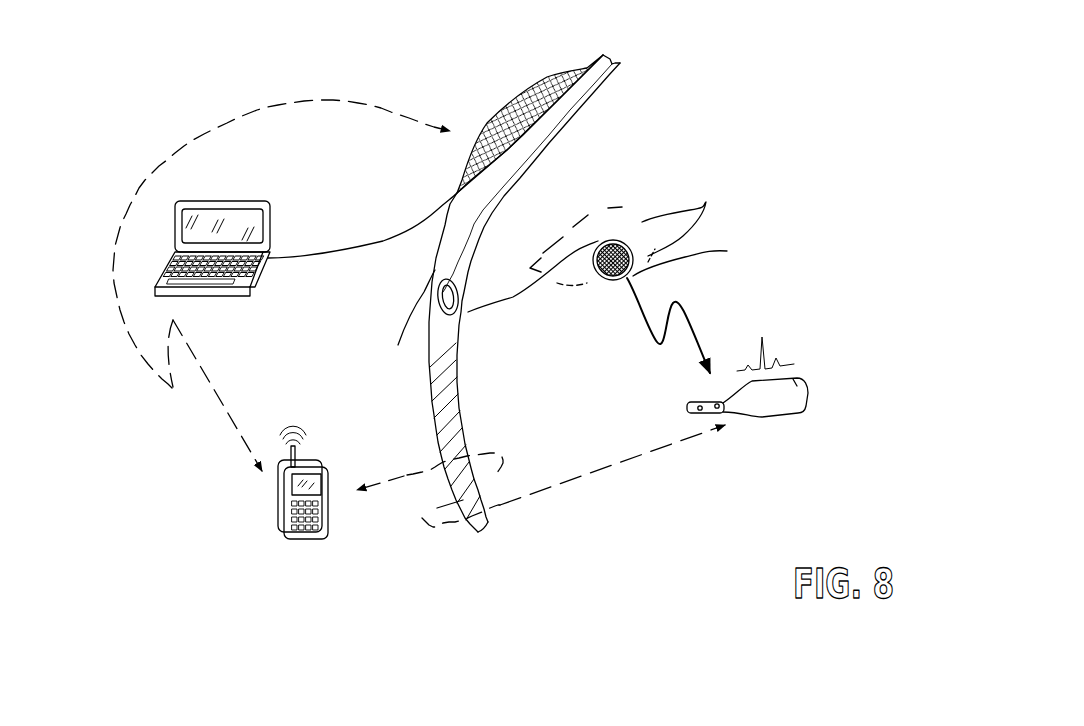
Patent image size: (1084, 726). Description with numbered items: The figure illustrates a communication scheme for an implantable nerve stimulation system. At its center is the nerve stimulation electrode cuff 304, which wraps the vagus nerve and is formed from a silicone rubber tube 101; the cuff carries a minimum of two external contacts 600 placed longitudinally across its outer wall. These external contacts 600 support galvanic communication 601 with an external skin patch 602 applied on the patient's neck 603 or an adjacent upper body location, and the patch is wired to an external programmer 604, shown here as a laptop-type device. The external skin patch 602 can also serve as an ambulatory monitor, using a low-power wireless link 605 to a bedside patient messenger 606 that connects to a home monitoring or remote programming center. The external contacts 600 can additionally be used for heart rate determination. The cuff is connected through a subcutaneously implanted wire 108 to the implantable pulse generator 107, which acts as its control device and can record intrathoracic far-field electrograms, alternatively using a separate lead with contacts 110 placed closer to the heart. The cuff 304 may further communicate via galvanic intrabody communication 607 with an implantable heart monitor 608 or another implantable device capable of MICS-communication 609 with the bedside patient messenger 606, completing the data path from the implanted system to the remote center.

The silicone rubber tube 101 is at (716, 252).
The implantable pulse generator 107 is at (440, 316).
The subcutaneously implanted wire 108 is at (474, 297).
The separate lead with contacts 110 is at (520, 292).
The nerve stimulation electrode cuff 304 is at (597, 282).
The external contacts 600 is at (630, 236).
The galvanic communication 601 is at (523, 133).
The external skin patch 602 is at (462, 157).
The patient's neck 603 is at (432, 262).
The external programmer 604 is at (243, 200).
The low-power wireless link 605 is at (256, 106).
The bedside patient messenger 606 is at (310, 463).
The galvanic intrabody communication 607 is at (690, 323).
The implantable heart monitor 608 is at (796, 378).
The MICS-communication 609 is at (578, 481).